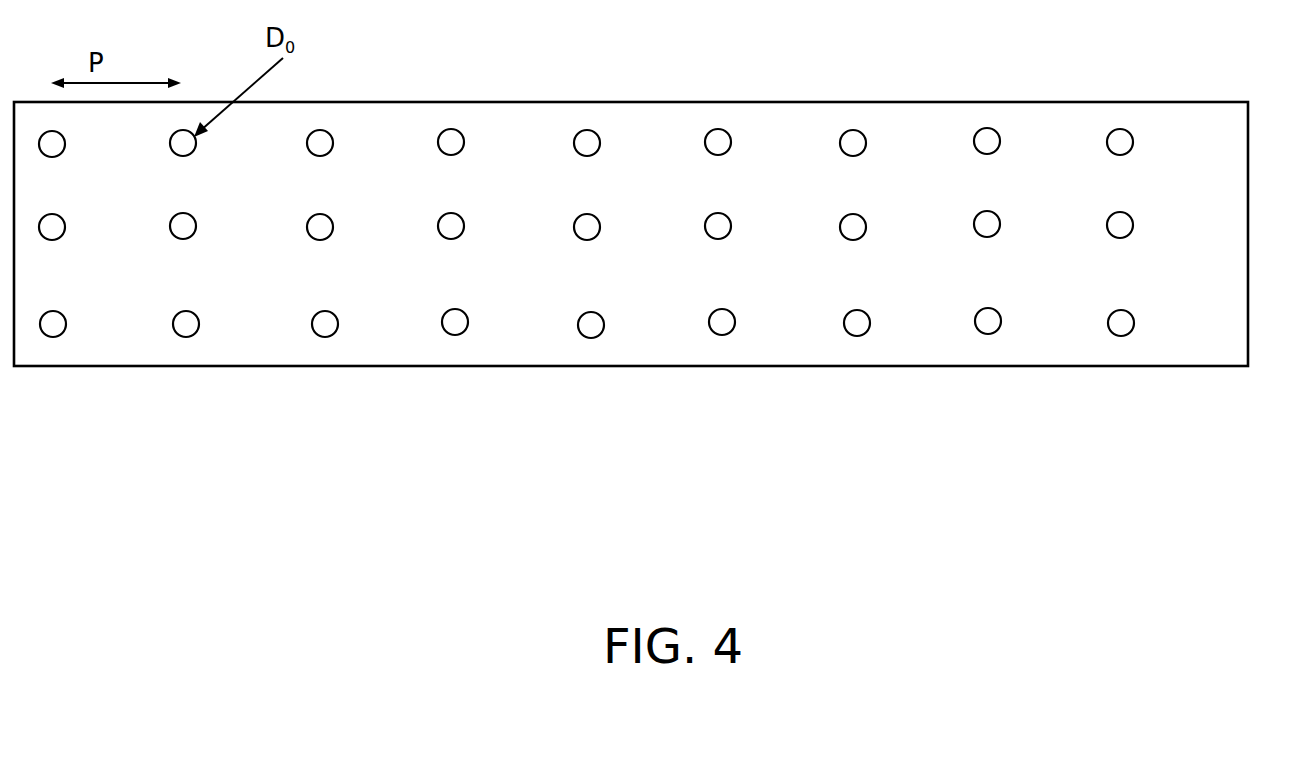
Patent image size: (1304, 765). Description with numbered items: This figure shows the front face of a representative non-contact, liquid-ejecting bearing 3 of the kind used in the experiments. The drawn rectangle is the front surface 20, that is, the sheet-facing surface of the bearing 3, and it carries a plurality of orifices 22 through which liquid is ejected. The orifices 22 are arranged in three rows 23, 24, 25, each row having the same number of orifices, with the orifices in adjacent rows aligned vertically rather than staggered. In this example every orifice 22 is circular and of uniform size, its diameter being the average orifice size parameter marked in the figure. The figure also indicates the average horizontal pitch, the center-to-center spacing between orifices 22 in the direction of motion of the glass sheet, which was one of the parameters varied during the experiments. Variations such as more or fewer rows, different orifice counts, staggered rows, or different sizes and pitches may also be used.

The liquid-ejecting bearing 3 is at (968, 410).
The front surface 20 is at (128, 330).
The orifice 22 is at (325, 324).
The first row of orifices 23 is at (1145, 143).
The second row of orifices 24 is at (1145, 226).
The third row of orifices 25 is at (1145, 323).